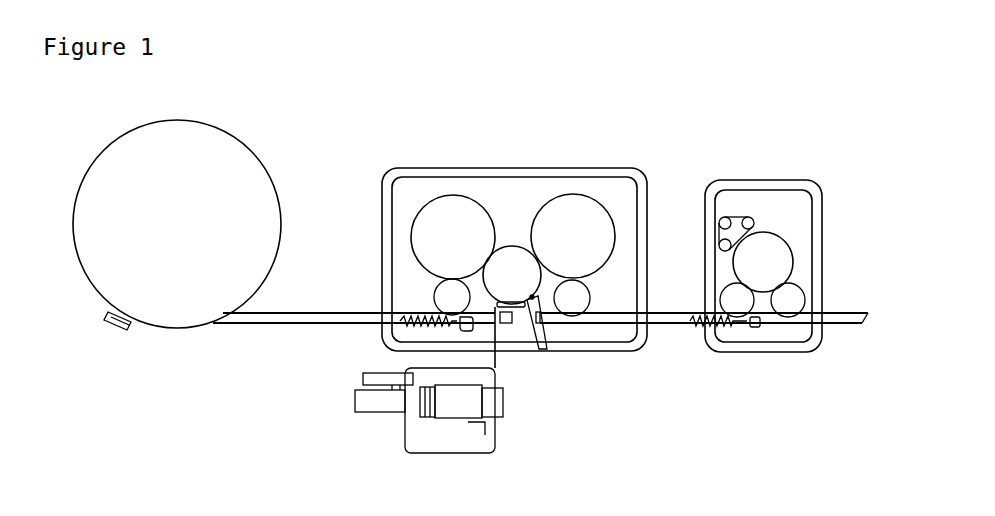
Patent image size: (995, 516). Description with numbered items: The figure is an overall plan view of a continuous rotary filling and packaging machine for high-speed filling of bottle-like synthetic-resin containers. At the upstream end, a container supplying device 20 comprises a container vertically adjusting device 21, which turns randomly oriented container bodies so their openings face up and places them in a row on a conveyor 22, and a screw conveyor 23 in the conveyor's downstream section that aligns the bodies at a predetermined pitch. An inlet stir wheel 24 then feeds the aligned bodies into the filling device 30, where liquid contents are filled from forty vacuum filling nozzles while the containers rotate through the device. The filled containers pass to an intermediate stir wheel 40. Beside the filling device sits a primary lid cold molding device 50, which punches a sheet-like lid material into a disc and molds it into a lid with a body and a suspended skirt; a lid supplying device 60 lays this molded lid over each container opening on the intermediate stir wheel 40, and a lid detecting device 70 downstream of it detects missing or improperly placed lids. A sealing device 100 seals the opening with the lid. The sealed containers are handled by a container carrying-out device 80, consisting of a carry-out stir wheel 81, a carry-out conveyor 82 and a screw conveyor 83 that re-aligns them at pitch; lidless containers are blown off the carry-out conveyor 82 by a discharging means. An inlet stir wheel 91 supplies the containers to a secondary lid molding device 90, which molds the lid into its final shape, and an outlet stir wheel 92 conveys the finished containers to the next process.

The container supplying device 20 is at (160, 325).
The container vertically adjusting device 21 is at (112, 155).
The conveyor 22 is at (237, 318).
The screw conveyor 23 is at (413, 308).
The inlet stir wheel 24 is at (433, 287).
The filling device 30 is at (418, 208).
The intermediate stir wheel 40 is at (512, 247).
The primary lid cold molding device 50 is at (427, 415).
The lid supplying device 60 is at (512, 310).
The lid detecting device 70 is at (543, 347).
The container carrying-out device 80 is at (595, 318).
The carry-out stir wheel 81 is at (587, 287).
The carry-out conveyor 82 is at (665, 323).
The screw conveyor 83 is at (717, 327).
The secondary lid molding device 90 is at (792, 253).
The inlet stir wheel 91 is at (727, 288).
The outlet stir wheel 92 is at (805, 295).
The sealing device 100 is at (597, 195).